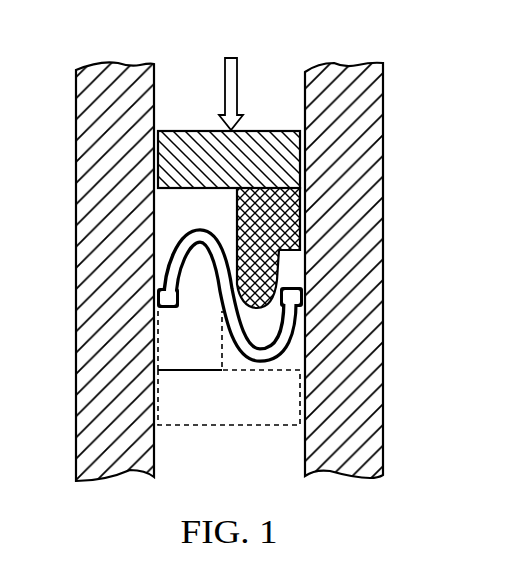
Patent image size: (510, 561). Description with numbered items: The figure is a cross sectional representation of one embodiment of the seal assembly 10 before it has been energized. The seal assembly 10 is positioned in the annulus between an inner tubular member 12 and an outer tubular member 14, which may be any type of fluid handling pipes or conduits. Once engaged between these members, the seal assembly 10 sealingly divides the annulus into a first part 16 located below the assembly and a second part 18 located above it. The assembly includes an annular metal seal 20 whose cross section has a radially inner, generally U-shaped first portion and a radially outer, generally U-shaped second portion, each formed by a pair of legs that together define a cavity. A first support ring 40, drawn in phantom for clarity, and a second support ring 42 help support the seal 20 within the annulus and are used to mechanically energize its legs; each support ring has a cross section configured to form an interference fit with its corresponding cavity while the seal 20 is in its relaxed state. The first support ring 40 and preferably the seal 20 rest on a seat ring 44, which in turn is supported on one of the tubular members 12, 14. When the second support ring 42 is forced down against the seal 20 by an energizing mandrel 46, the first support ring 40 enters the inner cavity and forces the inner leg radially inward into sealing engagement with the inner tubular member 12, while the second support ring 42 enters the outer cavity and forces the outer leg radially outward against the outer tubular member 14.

The seal assembly 10 is at (255, 381).
The inner tubular member 12 is at (100, 414).
The outer tubular member 14 is at (331, 412).
The first part 16 is at (165, 464).
The second part 18 is at (175, 92).
The annular metal seal 20 is at (222, 312).
The first support ring 40 is at (175, 362).
The second support ring 42 is at (236, 203).
The seat ring 44 is at (215, 423).
The energizing mandrel 46 is at (277, 133).